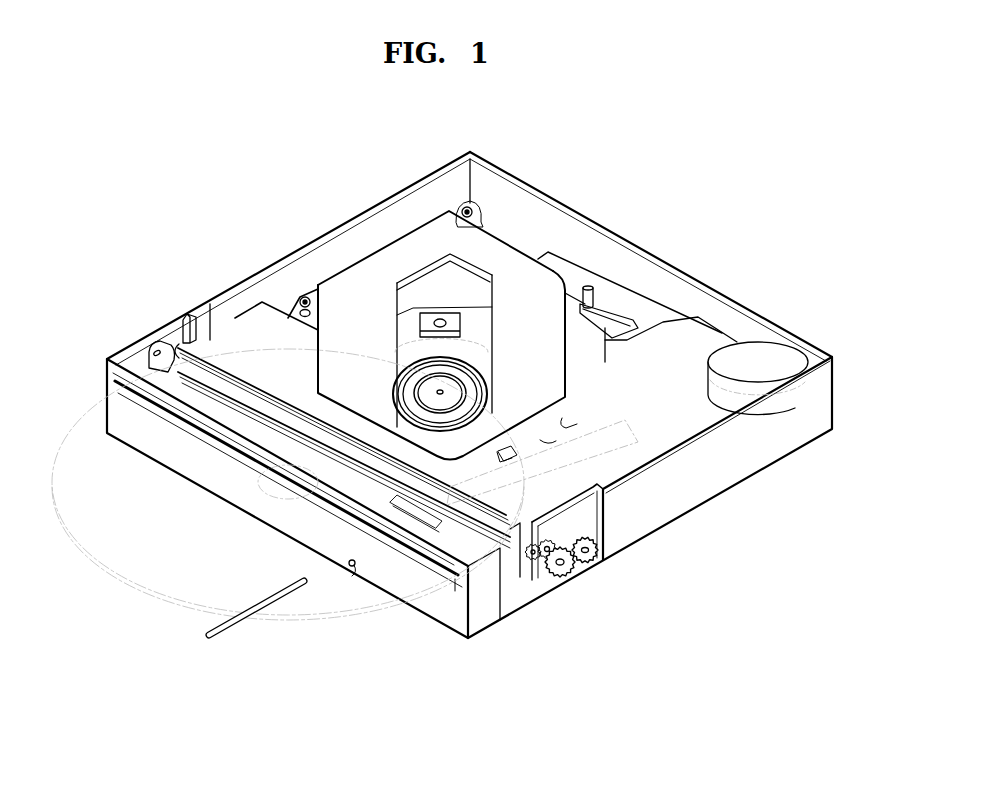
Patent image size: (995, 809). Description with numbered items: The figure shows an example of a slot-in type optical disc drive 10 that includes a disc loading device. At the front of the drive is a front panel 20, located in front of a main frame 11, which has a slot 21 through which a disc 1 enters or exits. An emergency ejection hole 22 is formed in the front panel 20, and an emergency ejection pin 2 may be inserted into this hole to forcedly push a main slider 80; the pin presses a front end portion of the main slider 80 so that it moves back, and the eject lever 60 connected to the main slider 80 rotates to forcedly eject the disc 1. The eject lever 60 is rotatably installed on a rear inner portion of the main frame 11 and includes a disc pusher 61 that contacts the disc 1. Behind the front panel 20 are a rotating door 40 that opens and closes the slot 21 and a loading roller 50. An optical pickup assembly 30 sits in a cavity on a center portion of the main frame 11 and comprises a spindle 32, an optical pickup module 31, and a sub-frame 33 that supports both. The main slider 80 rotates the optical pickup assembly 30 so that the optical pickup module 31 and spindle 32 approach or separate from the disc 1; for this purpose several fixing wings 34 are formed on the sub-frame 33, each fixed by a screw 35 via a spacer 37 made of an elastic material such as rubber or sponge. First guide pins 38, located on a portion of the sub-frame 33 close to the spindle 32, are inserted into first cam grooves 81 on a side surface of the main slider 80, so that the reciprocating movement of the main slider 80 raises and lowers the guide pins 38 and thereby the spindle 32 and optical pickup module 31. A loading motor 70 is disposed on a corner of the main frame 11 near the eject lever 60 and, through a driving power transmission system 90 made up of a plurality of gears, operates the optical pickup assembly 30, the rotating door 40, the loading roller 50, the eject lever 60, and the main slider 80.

The disc 1 is at (77, 432).
The emergency ejection pin 2 is at (228, 640).
The slot-in type optical disc drive 10 is at (703, 252).
The main frame 11 is at (727, 301).
The front panel 20 is at (290, 522).
The slot 21 is at (233, 453).
The emergency ejection hole 22 is at (352, 568).
The optical pickup assembly 30 is at (512, 237).
The optical pickup module 31 is at (441, 320).
The spindle 32 is at (455, 385).
The sub-frame 33 is at (420, 240).
The fixing wings 34 is at (310, 297).
The screw 35 is at (302, 309).
The spacer 37 is at (283, 310).
The first guide pins 38 is at (510, 452).
The rotating door 40 is at (228, 407).
The loading roller 50 is at (200, 338).
The eject lever 60 is at (626, 320).
The disc pusher 61 is at (590, 286).
The loading motor 70 is at (775, 353).
The main slider 80 is at (630, 430).
The first cam grooves 81 is at (543, 442).
The driving power transmission system 90 is at (572, 583).